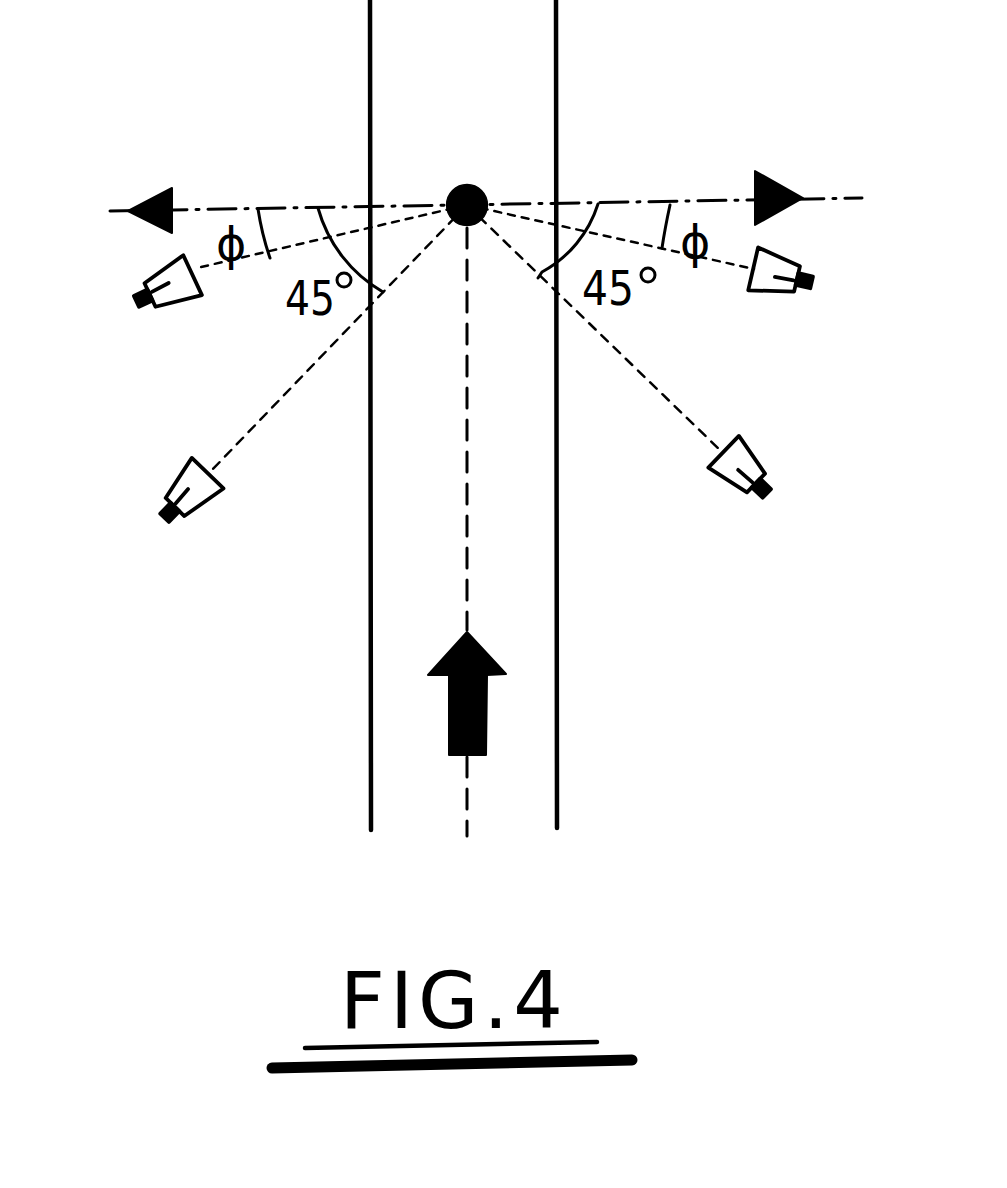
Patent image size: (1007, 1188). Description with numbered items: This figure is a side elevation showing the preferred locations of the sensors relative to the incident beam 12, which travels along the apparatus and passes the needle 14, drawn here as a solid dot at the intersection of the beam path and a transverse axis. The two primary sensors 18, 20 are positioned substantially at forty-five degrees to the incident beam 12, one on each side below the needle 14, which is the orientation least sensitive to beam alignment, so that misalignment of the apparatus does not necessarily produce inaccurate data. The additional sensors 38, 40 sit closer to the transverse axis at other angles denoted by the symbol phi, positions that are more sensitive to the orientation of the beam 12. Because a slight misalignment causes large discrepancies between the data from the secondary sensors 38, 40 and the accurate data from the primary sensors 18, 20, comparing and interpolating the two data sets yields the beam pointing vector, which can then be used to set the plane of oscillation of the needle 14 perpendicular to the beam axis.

The beam 12 is at (390, 72).
The needle 14 is at (530, 168).
The primary sensor 18 is at (162, 518).
The primary sensor 20 is at (768, 492).
The additional sensor 38 is at (136, 306).
The additional sensor 40 is at (812, 285).